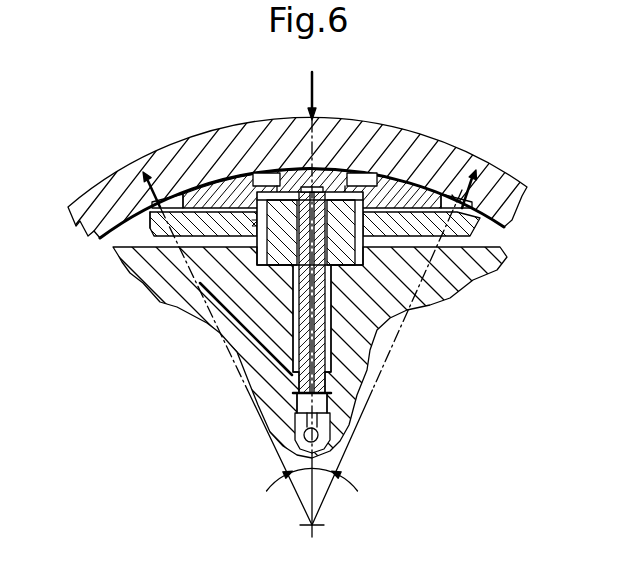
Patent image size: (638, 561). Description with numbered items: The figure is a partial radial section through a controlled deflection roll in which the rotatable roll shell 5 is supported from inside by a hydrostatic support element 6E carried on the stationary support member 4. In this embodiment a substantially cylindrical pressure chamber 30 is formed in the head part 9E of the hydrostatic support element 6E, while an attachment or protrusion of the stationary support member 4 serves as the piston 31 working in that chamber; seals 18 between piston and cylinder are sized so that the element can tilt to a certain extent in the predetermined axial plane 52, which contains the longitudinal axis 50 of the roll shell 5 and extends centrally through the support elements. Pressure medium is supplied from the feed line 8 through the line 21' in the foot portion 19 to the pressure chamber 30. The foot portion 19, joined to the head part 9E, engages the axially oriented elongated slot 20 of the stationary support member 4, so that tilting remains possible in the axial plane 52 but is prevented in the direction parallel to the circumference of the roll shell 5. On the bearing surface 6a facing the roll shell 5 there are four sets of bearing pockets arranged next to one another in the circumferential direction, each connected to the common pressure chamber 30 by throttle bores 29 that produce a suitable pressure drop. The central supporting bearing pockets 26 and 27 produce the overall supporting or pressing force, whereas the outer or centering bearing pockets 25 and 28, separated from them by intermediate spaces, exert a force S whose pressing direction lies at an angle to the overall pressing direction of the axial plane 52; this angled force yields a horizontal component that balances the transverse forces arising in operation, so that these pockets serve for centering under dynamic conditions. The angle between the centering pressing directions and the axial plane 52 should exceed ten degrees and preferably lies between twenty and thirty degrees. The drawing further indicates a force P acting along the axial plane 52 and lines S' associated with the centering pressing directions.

The stationary support member 4 is at (463, 273).
The roll shell 5 is at (510, 200).
The hydrostatic support element 6E is at (480, 230).
The bearing surface 6a is at (255, 168).
The feed line 8 is at (318, 437).
The head part 9E is at (157, 218).
The seals 18 is at (195, 272).
The foot portion 19 is at (300, 384).
The elongated slot 20 is at (323, 405).
The line 21' is at (240, 345).
The outer bearing pocket 25 is at (163, 203).
The central supporting bearing pocket 26 is at (262, 176).
The central supporting bearing pocket 27 is at (355, 176).
The outer bearing pocket 28 is at (467, 206).
The throttle bores 29 is at (276, 172).
The pressure chamber 30 is at (455, 195).
The piston 31 is at (228, 292).
The longitudinal axis 50 is at (312, 527).
The predetermined axial plane 52 is at (313, 488).
The load force P is at (319, 95).
The force S is at (290, 164).
The line of action S' is at (270, 357).